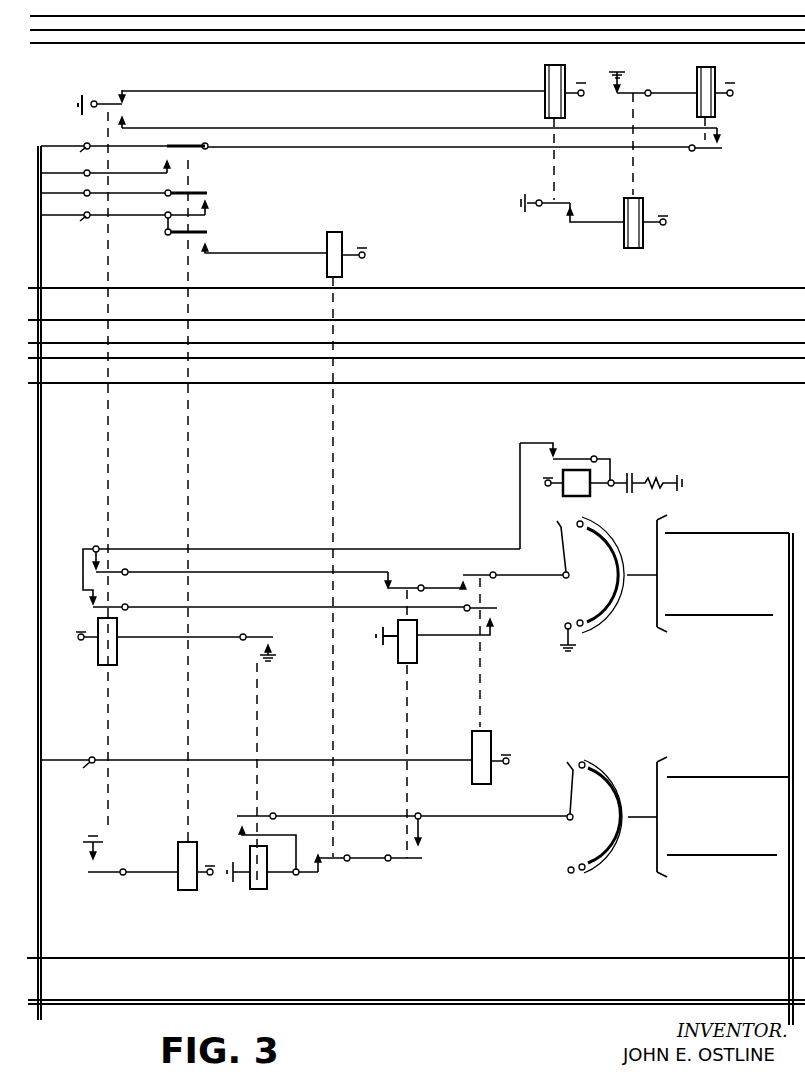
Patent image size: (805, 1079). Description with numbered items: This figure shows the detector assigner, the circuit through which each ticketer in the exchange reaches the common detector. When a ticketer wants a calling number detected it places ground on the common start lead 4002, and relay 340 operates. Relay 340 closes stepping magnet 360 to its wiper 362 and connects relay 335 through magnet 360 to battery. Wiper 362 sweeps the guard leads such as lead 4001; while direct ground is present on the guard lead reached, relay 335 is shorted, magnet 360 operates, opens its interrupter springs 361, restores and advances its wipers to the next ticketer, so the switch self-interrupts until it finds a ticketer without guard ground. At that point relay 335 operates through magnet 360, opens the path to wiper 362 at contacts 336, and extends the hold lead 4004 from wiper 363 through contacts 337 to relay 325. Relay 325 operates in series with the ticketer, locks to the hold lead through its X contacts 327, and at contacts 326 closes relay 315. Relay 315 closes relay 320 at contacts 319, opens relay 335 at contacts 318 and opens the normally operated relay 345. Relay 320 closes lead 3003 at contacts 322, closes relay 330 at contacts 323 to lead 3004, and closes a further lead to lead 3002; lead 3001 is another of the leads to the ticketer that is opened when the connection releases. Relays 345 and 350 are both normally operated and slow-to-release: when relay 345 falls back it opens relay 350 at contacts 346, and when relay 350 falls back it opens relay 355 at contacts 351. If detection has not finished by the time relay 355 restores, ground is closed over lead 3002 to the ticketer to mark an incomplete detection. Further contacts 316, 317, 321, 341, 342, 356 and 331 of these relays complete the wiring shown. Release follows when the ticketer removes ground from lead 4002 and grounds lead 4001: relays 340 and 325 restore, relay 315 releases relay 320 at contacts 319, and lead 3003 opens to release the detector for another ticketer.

The contact 316 is at (130, 105).
The lead 3001 is at (54, 141).
The lead 3002 is at (54, 168).
The lead 3003 is at (54, 188).
The lead 3004 is at (54, 210).
The contact 321 is at (182, 155).
The contacts 322 is at (212, 200).
The contacts 323 is at (212, 239).
The relay 330 is at (348, 240).
The relay 345 is at (543, 77).
The contacts 351 is at (630, 88).
The relay 355 is at (720, 79).
The contact 356 is at (724, 142).
The contacts 346 is at (563, 208).
The relay 350 is at (622, 243).
The contact 317 is at (103, 568).
The contacts 318 is at (103, 598).
The contacts 336 is at (382, 587).
The contact 341 is at (458, 573).
The wiper 362 is at (607, 584).
The interrupter springs 361 is at (563, 452).
The magnet 360 is at (577, 493).
The guard lead 4001 is at (705, 528).
The contact 342 is at (496, 620).
The relay 335 is at (421, 659).
The relay 315 is at (120, 655).
The contacts 326 is at (277, 649).
The common start lead 4002 is at (48, 751).
The relay 340 is at (483, 727).
The wiper 363 is at (539, 816).
The hold lead 4004 is at (693, 773).
The X contacts 327 is at (232, 818).
The contacts 337 is at (422, 850).
The contacts 319 is at (103, 863).
The relay 320 is at (190, 893).
The relay 325 is at (260, 890).
The contact 331 is at (327, 863).